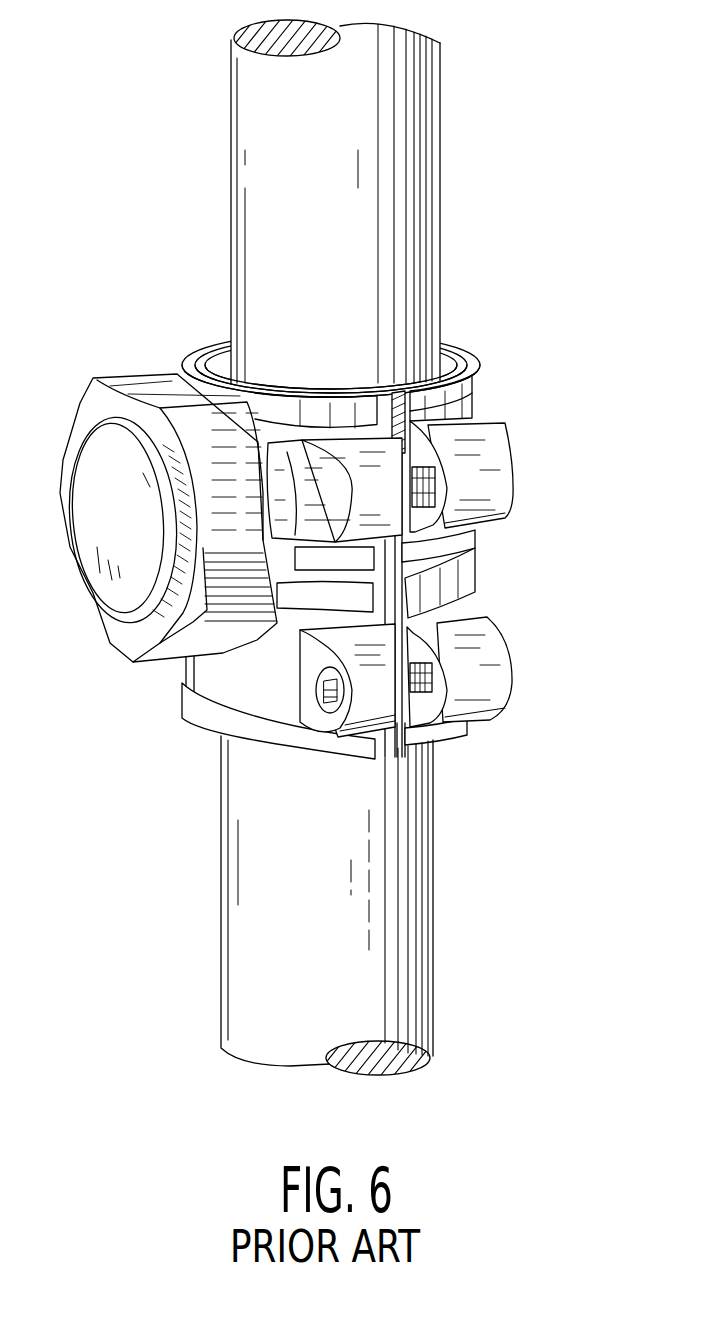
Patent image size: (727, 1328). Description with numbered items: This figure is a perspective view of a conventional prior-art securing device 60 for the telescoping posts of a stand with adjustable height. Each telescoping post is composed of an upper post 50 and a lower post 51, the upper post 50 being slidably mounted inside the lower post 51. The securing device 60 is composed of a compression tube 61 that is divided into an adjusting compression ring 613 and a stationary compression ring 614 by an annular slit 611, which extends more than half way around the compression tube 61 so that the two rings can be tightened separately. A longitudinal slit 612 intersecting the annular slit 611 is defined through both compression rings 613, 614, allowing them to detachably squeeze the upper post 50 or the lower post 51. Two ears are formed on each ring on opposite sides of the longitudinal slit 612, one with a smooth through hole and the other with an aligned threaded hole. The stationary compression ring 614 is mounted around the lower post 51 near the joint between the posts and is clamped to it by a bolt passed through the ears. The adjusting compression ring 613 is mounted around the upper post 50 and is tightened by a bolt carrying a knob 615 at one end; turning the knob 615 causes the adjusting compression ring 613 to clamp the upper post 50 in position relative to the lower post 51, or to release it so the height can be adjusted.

The upper post 50 is at (432, 329).
The lower post 51 is at (432, 865).
The securing device 60 is at (227, 553).
The compression tube 61 is at (189, 728).
The annular slit 611 is at (452, 557).
The longitudinal slit 612 is at (473, 373).
The adjusting compression ring 613 is at (455, 403).
The stationary compression ring 614 is at (250, 708).
The knob 615 is at (98, 468).